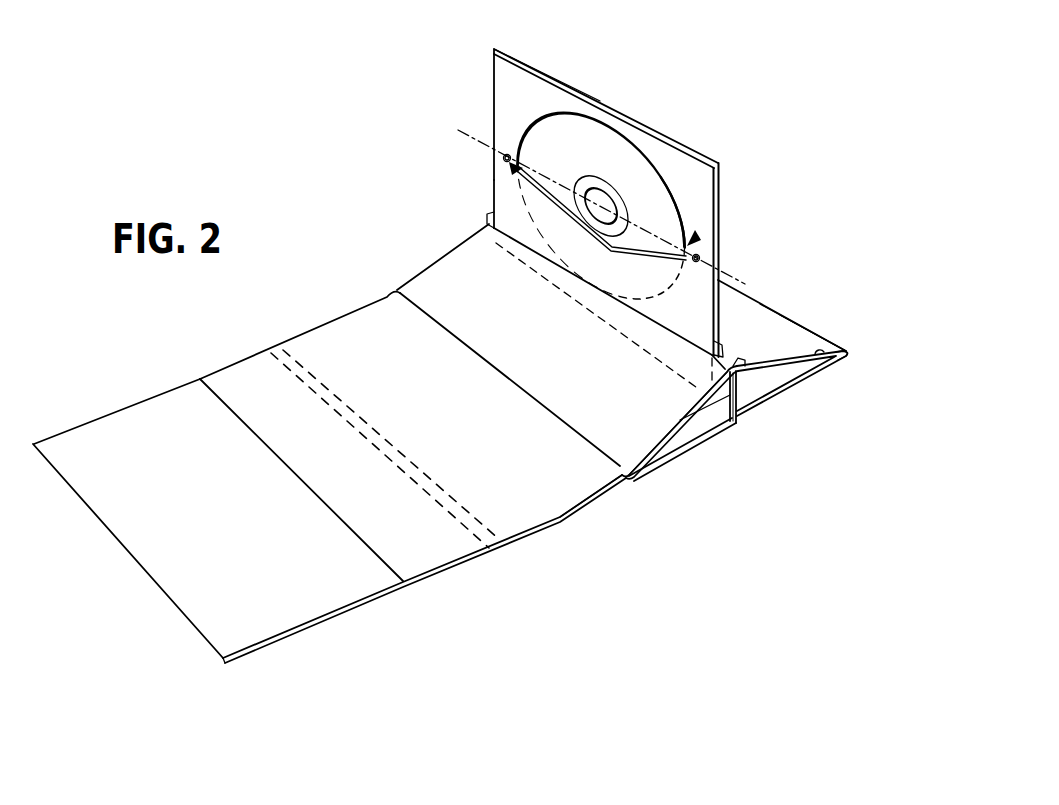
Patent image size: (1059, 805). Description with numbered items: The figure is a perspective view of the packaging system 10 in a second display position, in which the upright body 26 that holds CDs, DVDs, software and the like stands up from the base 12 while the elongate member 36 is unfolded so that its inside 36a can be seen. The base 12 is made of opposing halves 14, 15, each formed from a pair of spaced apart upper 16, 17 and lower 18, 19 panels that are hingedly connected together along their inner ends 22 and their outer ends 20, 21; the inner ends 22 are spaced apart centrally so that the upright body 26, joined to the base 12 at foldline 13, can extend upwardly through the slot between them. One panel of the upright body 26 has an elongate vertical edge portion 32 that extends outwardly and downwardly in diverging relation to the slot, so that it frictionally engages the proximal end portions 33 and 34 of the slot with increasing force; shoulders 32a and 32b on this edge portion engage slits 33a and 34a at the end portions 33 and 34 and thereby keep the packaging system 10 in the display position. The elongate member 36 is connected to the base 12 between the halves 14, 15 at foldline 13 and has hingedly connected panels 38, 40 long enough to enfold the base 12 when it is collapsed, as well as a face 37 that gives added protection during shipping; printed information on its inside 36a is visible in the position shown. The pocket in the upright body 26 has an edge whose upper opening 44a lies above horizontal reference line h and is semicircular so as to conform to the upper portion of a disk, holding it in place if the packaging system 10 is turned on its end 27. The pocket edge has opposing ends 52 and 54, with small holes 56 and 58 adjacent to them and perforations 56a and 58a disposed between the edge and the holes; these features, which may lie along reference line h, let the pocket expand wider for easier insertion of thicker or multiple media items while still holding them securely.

The packaging system 10 is at (778, 58).
The base 12 is at (832, 320).
The foldline 13 is at (718, 395).
The opposing half of base 14 is at (793, 340).
The opposing half of base 15 is at (642, 418).
The upper panel 16 is at (840, 357).
The upper panel 17 is at (673, 421).
The lower panel 18 is at (793, 393).
The lower panel 19 is at (668, 441).
The outer end 20 is at (760, 305).
The outer end 21 is at (584, 444).
The inner end 22 is at (734, 350).
The upright body 26 is at (484, 94).
The end 27 is at (500, 50).
The elongate vertical edge portion 32 is at (720, 197).
The shoulder 32a is at (718, 349).
The shoulder 32b is at (485, 216).
The proximal end portion of slot 33 is at (505, 232).
The slit 33a is at (488, 215).
The proximal end portion of slot 34 is at (712, 356).
The slit 34a is at (731, 413).
The elongate member 36 is at (297, 322).
The inside of elongate member 36a is at (233, 388).
The face 37 is at (112, 433).
The panel of elongate member 38 is at (597, 493).
The panel of elongate member 40 is at (428, 574).
The upper opening 44a is at (548, 115).
The opposing end of pocket edge 52 is at (694, 239).
The opposing end of pocket edge 54 is at (512, 168).
The small hole 56 is at (507, 153).
The perforation 56a is at (513, 154).
The small hole 58 is at (704, 256).
The perforation 58a is at (692, 262).
The horizontal reference line h is at (601, 201).